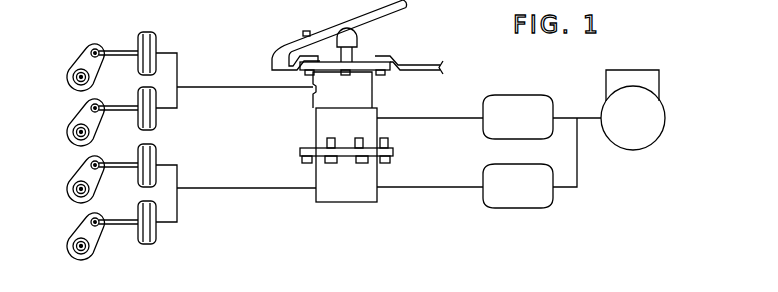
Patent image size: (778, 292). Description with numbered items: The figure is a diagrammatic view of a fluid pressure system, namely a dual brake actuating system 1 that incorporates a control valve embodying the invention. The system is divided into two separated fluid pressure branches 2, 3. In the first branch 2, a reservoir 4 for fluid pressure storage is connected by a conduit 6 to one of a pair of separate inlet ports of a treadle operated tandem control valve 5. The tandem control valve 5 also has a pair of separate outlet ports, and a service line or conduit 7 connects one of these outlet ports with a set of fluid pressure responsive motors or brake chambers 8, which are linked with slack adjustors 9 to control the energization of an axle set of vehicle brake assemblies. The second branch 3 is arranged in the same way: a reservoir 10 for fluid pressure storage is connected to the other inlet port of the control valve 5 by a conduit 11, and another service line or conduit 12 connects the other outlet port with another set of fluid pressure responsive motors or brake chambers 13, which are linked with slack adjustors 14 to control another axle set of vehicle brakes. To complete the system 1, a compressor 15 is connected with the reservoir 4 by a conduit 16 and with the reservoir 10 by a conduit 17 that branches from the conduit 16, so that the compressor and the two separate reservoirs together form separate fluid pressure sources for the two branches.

The dual brake actuating system 1 is at (616, 186).
The fluid pressure branch 2 is at (248, 81).
The fluid pressure branch 3 is at (263, 193).
The reservoir 4 is at (511, 126).
The treadle operated tandem control valve 5 is at (355, 193).
The conduit 6 is at (445, 116).
The service line or conduit 7 is at (217, 87).
The fluid pressure responsive motors or brake chambers 8 is at (138, 67).
The slack adjustors 9 is at (75, 86).
The reservoir 10 is at (506, 197).
The conduit 11 is at (447, 185).
The service line or conduit 12 is at (234, 186).
The fluid pressure responsive motors or brake chambers 13 is at (138, 180).
The slack adjustors 14 is at (76, 196).
The compressor 15 is at (624, 127).
The conduit 16 is at (594, 116).
The conduit 17 is at (580, 167).